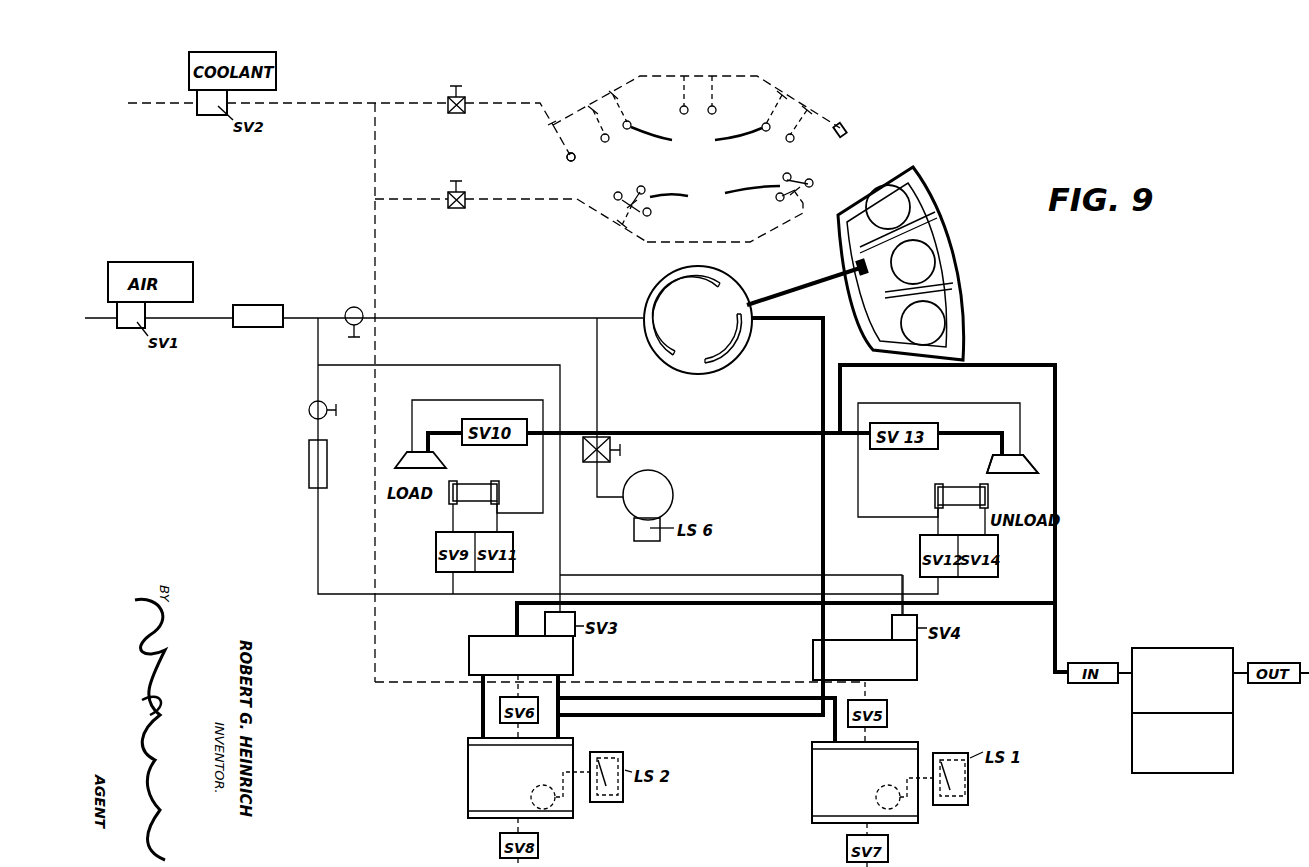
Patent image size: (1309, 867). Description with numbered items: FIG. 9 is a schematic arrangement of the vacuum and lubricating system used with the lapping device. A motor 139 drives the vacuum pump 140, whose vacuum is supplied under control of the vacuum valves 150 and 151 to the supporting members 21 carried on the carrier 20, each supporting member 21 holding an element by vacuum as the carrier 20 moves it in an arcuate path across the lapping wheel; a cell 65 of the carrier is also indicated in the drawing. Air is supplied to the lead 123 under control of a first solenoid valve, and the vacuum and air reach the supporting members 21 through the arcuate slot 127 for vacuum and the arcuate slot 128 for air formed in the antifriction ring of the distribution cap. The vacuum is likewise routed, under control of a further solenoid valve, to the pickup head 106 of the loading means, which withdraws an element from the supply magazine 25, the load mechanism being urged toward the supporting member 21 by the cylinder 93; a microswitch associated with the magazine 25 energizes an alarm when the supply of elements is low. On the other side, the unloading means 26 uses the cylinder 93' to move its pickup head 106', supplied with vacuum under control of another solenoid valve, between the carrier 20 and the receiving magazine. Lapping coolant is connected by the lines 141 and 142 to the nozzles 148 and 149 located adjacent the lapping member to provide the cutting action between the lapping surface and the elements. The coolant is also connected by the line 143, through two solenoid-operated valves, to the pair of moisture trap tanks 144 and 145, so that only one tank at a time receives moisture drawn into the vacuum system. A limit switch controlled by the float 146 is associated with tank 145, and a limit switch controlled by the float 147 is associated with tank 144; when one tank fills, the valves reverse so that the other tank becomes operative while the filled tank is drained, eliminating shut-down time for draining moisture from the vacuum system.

The carrier 20 is at (915, 263).
The supporting member 21 is at (920, 262).
The drum cell 65 is at (952, 272).
The lead for air 123 is at (613, 318).
The arcuate slot (vacuum) 127 is at (712, 359).
The arcuate slot (air) 128 is at (678, 283).
The coolant line 141 is at (493, 104).
The coolant line 142 is at (496, 200).
The coolant line 143 is at (378, 243).
The nozzle 148 is at (700, 118).
The nozzle 149 is at (713, 207).
The pickup head 106 is at (412, 446).
The pickup head 106' is at (1042, 457).
The cylinder 93 is at (474, 493).
The cylinder 93' is at (958, 500).
The magazine 25 is at (665, 478).
The unloading means 26 is at (994, 478).
The vacuum valve 150 is at (467, 648).
The vacuum valve 151 is at (910, 658).
The moisture trap tank 144 is at (478, 764).
The moisture trap tank 145 is at (818, 771).
The float 146 is at (897, 806).
The float 147 is at (575, 806).
The vacuum pump 140 is at (1182, 680).
The motor 139 is at (1182, 743).